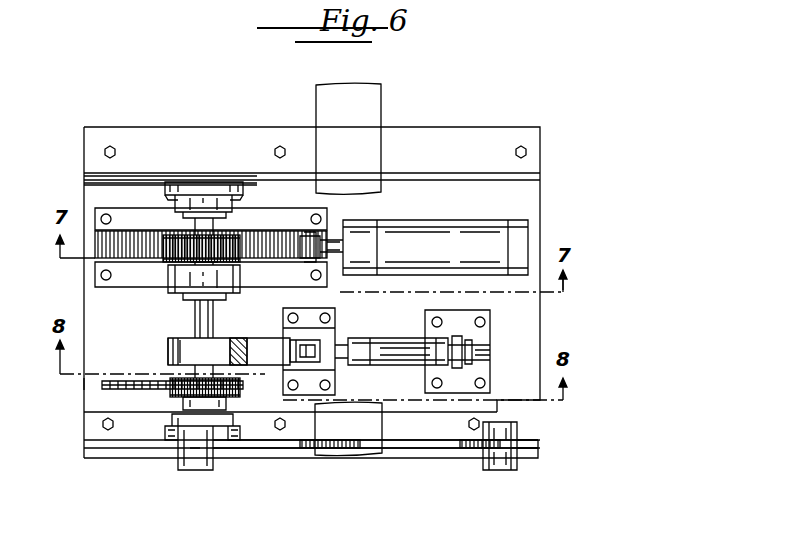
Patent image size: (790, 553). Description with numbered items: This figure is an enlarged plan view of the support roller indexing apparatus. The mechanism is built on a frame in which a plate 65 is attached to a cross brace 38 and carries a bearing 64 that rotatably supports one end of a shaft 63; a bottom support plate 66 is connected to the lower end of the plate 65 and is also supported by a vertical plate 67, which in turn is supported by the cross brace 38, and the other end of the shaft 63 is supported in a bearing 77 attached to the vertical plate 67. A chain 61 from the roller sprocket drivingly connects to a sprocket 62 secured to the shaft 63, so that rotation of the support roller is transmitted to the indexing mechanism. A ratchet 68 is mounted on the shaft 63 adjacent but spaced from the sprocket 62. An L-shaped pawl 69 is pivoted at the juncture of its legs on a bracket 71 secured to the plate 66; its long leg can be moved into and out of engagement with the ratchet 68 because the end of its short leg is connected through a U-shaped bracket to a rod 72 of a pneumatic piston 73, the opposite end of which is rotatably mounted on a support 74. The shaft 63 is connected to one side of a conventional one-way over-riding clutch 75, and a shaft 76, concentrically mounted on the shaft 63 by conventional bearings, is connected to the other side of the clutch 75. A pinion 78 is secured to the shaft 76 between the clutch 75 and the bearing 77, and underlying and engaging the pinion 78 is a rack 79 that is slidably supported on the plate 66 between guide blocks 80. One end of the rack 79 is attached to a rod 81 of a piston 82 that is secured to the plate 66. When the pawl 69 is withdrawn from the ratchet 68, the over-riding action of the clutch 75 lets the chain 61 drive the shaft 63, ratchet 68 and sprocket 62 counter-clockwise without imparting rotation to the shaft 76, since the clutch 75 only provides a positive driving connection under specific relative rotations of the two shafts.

The cross brace 38 is at (376, 118).
The chain 61 is at (130, 388).
The sprocket 62 is at (176, 400).
The shaft 63 is at (200, 320).
The bearing 64 is at (215, 432).
The plate 65 is at (256, 450).
The bottom support plate 66 is at (84, 383).
The vertical plate 67 is at (143, 176).
The ratchet 68 is at (168, 346).
The L-shaped pawl 69 is at (258, 346).
The bracket 71 is at (330, 366).
The rod 72 is at (342, 348).
The piston 73 is at (383, 346).
The support 74 is at (488, 350).
The one-way over-riding clutch 75 is at (234, 274).
The shaft 76 is at (198, 263).
The bearing 77 is at (207, 188).
The pinion 78 is at (232, 246).
The rack 79 is at (131, 245).
The guide blocks 80 is at (97, 210).
The rod 81 is at (337, 240).
The piston 82 is at (401, 230).